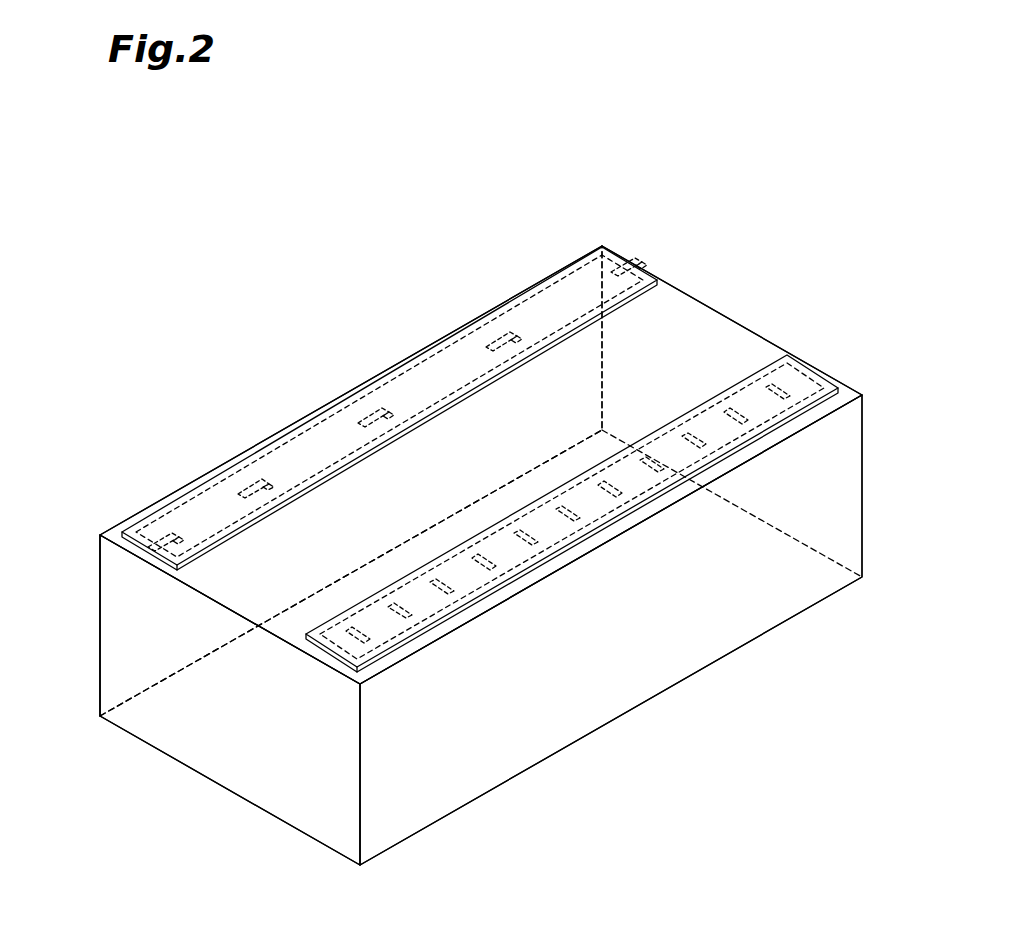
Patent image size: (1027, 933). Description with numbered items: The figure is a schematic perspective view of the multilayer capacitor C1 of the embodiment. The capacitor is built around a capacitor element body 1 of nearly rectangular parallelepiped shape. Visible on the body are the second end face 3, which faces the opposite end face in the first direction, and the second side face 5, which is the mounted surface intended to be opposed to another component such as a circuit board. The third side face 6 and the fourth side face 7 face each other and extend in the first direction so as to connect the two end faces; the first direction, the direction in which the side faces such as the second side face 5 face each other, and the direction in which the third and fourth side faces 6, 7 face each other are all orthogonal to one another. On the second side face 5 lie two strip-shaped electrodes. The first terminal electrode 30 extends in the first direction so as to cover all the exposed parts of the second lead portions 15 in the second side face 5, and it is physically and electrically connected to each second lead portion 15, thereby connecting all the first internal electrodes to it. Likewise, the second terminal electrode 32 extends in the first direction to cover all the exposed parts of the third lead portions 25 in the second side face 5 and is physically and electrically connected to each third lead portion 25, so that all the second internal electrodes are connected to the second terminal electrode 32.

The multilayer capacitor C1 is at (246, 298).
The capacitor element body 1 is at (818, 499).
The second end face 3 is at (232, 745).
The second side face 5 is at (692, 342).
The third side face 6 is at (153, 608).
The fourth side face 7 is at (647, 656).
The first terminal electrode 30 is at (423, 388).
The second terminal electrode 32 is at (580, 497).
The second lead portions 15 is at (183, 541).
The third lead portions 25 is at (396, 642).